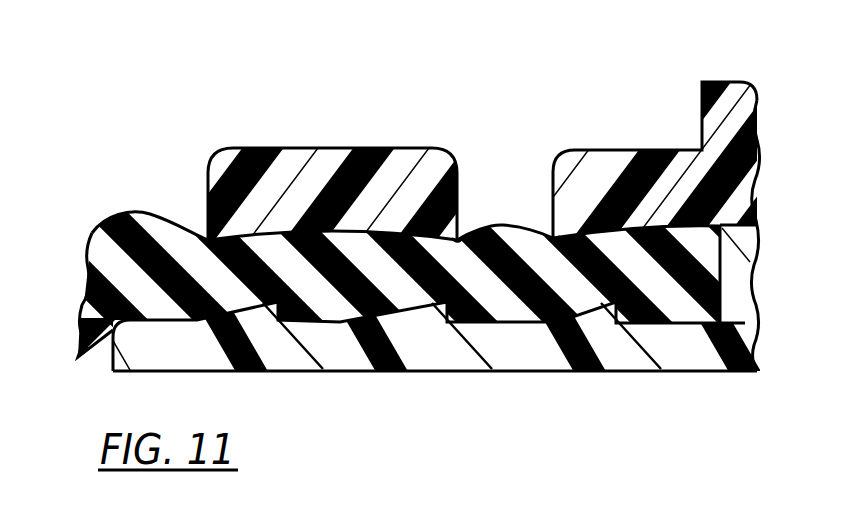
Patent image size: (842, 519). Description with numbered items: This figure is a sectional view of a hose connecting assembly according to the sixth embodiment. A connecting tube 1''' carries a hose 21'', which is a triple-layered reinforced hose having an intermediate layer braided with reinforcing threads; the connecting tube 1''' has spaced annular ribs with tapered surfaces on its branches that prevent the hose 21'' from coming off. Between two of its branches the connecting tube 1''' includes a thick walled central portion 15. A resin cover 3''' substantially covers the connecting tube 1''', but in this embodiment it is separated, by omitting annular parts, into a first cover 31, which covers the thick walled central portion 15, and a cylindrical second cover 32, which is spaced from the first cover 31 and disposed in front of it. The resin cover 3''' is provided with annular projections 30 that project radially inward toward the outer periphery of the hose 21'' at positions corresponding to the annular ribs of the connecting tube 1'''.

The resin cover 3''' is at (480, 44).
The cylindrical second cover 32 is at (346, 162).
The first cover 31 is at (618, 164).
The annular projections 30 is at (210, 237).
The hose 21'' is at (421, 259).
The thick walled central portion 15 is at (733, 281).
The connecting tube 1''' is at (415, 259).